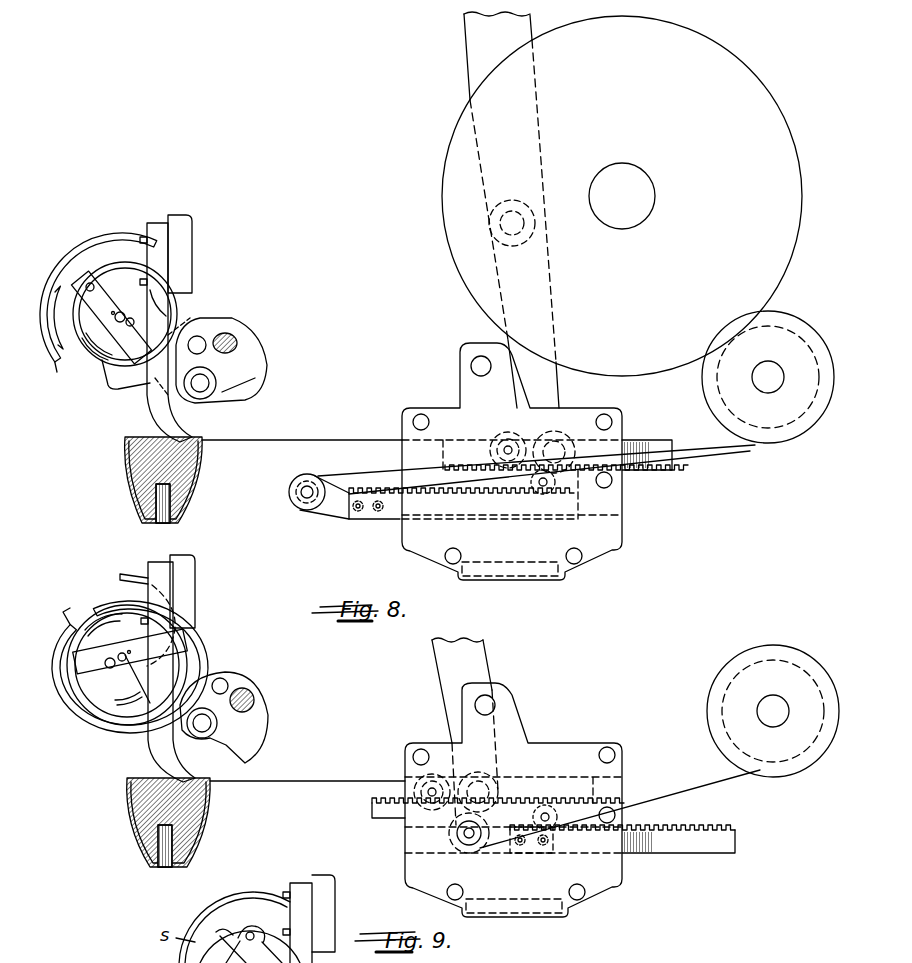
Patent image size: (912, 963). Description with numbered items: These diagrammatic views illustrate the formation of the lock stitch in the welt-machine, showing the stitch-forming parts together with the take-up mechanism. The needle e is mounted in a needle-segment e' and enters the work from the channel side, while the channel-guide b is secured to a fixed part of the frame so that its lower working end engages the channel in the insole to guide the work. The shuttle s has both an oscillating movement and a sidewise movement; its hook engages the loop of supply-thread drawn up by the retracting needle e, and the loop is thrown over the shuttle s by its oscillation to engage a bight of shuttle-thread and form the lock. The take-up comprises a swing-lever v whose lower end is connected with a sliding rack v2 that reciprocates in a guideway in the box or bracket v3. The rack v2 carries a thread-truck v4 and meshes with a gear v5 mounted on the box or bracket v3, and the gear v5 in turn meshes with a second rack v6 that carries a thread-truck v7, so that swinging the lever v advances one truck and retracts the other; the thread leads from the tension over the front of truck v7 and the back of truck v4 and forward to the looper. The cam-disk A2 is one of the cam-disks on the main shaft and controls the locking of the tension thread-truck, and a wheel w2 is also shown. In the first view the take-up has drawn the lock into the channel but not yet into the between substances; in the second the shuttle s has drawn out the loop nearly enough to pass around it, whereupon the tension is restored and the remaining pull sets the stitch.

In FIG. 8, the cam-disk A2 is at (622, 196).
In FIG. 8, the swing-lever v is at (472, 76).
In FIG. 9, the swing-lever v is at (480, 676).
In FIG. 8, the wheel w2 is at (798, 322).
In FIG. 9, the wheel w2 is at (797, 648).
In FIG. 8, the sliding rack v2 is at (652, 446).
In FIG. 9, the sliding rack v2 is at (400, 812).
In FIG. 8, the box or bracket v3 is at (412, 556).
In FIG. 9, the box or bracket v3 is at (620, 878).
In FIG. 8, the thread-truck v4 is at (508, 443).
In FIG. 9, the thread-truck v4 is at (410, 792).
In FIG. 8, the gear v5 is at (556, 484).
In FIG. 9, the gear v5 is at (540, 806).
In FIG. 8, the rack v6 is at (388, 520).
In FIG. 9, the rack v6 is at (712, 831).
In FIG. 8, the thread-truck v7 is at (293, 484).
In FIG. 9, the thread-truck v7 is at (455, 838).
In FIG. 8, the shuttle s is at (56, 368).
In FIG. 9, the shuttle s is at (75, 720).
In FIG. 8, the channel-guide b is at (166, 328).
In FIG. 9, the channel-guide b is at (157, 668).
In FIG. 8, the needle-segment e' is at (221, 346).
In FIG. 9, the needle-segment e' is at (235, 717).
In FIG. 8, the needle e is at (263, 466).
In FIG. 9, the needle e is at (266, 801).